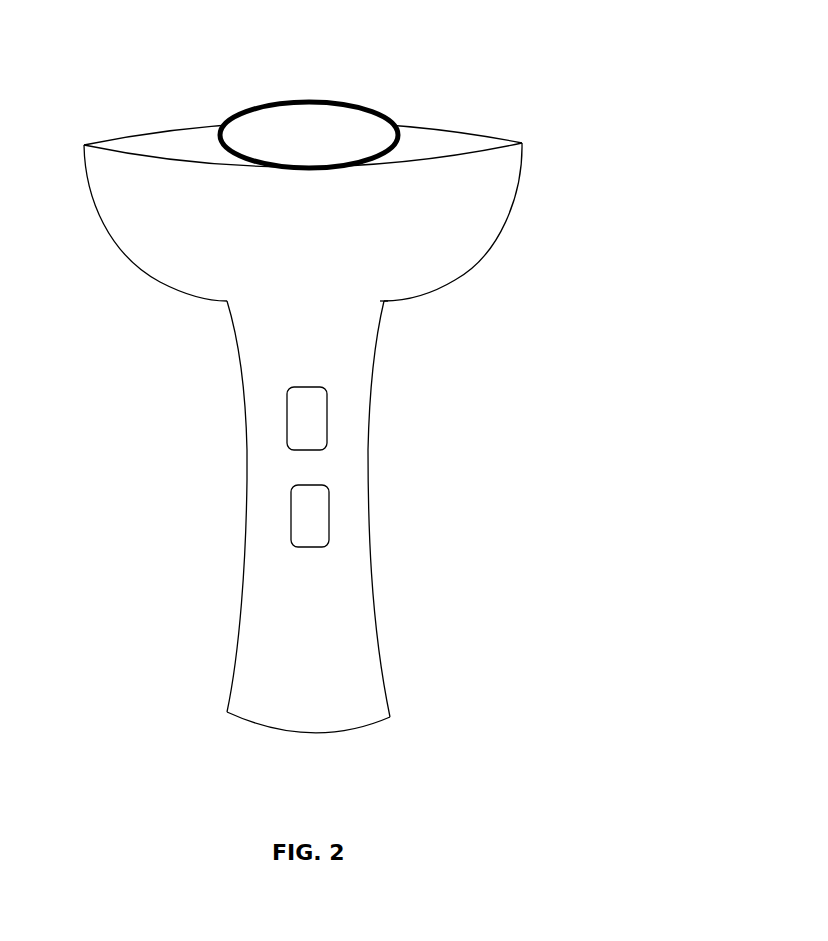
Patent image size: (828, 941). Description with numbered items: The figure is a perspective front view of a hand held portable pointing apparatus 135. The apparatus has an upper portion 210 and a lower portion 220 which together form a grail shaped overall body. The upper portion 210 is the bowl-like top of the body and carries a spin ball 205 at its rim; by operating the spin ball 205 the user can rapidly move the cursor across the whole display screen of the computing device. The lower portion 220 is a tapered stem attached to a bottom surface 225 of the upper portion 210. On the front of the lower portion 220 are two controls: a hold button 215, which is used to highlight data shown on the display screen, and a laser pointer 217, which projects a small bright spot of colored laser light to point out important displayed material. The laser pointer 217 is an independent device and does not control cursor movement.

The hand held portable pointing apparatus 135 is at (570, 94).
The spin ball 205 is at (365, 108).
The upper portion 210 is at (520, 193).
The hold button 215 is at (327, 425).
The laser pointer 217 is at (328, 518).
The lower portion 220 is at (368, 595).
The bottom surface 225 is at (384, 301).